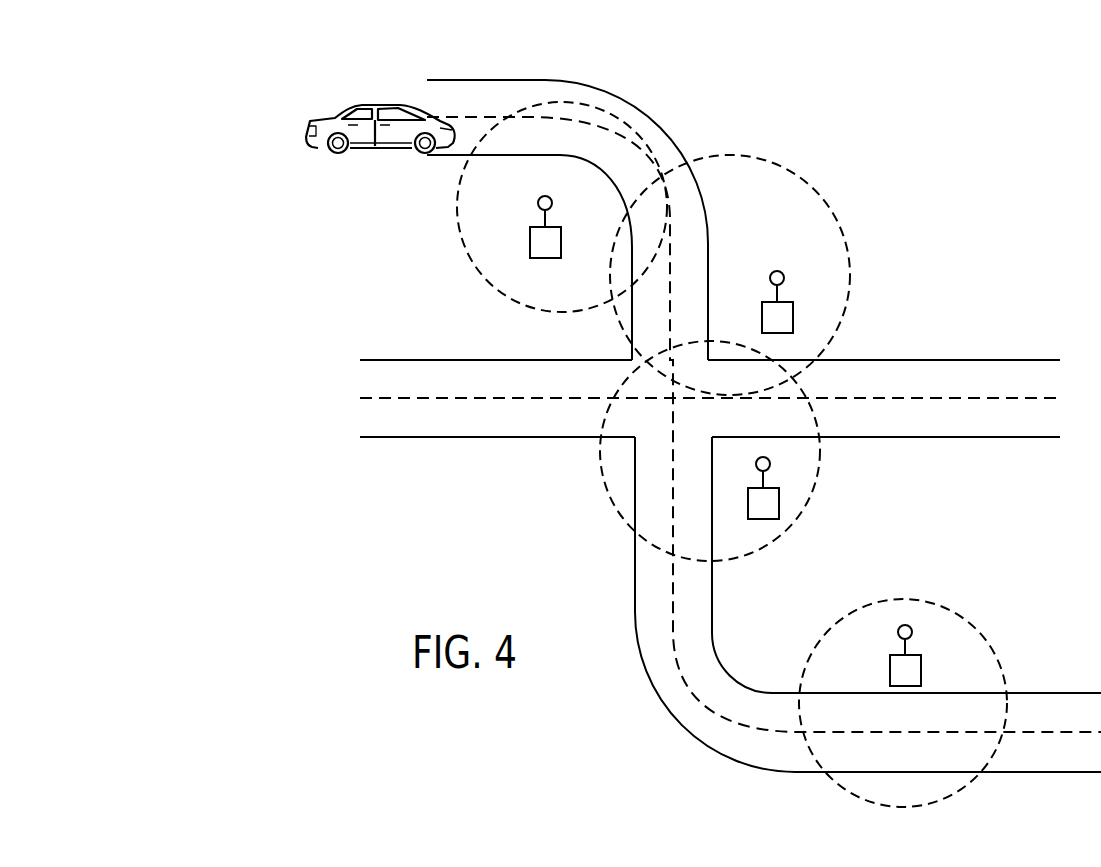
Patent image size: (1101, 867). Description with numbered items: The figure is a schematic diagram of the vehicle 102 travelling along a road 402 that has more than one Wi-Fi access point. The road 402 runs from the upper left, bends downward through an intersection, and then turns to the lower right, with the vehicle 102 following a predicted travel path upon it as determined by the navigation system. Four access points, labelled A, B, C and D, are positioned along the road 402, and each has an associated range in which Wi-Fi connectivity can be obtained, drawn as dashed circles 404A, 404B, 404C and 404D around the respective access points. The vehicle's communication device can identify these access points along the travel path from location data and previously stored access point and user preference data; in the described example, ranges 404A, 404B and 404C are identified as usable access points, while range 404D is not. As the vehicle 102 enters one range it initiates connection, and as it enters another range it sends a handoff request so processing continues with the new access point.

The road 402 is at (457, 72).
The vehicle 102 is at (295, 150).
The Wi-Fi connectivity range of access point A 404A is at (472, 257).
The Wi-Fi connectivity range of access point B 404B is at (850, 275).
The Wi-Fi connectivity range of access point C 404C is at (810, 493).
The Wi-Fi connectivity range of access point D 404D is at (988, 647).